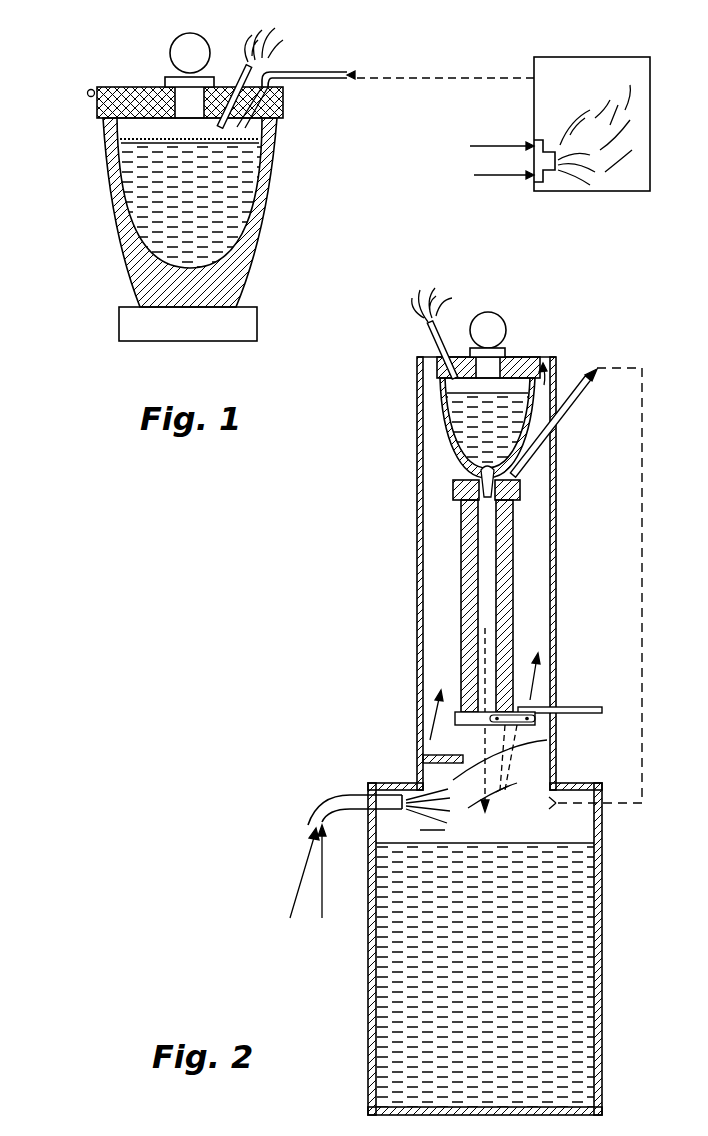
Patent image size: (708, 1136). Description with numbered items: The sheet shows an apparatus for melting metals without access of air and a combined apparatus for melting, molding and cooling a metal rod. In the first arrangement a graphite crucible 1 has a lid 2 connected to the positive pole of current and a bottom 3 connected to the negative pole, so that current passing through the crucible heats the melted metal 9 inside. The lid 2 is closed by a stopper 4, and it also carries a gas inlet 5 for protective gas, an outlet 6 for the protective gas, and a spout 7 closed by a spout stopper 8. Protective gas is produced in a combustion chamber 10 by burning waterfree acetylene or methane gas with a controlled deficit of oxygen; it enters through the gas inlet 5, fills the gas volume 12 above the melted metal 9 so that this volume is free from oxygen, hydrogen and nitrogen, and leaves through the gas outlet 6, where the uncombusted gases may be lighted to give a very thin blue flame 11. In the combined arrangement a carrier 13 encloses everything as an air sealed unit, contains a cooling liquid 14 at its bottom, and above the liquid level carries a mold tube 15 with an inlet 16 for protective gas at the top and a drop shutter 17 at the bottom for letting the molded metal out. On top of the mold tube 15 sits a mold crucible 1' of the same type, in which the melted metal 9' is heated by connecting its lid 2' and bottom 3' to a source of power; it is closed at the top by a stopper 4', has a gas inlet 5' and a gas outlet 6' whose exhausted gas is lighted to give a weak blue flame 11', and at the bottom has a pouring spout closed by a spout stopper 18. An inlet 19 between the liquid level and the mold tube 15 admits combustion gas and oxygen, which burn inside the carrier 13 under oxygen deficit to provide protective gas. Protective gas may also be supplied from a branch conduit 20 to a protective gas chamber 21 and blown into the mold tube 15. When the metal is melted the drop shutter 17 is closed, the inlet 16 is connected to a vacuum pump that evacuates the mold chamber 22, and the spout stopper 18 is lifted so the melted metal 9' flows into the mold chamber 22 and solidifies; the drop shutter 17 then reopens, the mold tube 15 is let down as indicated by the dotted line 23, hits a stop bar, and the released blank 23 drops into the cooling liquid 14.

In FIG. 1, the graphite crucible 1 is at (172, 212).
In FIG. 1, the lid 2 is at (216, 103).
In FIG. 1, the bottom 3 is at (163, 324).
In FIG. 1, the stopper 4 is at (183, 44).
In FIG. 1, the gas inlet 5 is at (296, 82).
In FIG. 1, the gas outlet 6 is at (234, 73).
In FIG. 1, the spout 7 is at (100, 118).
In FIG. 1, the spout stopper 8 is at (86, 93).
In FIG. 1, the melted metal 9 is at (212, 208).
In FIG. 1, the combustion chamber 10 is at (578, 185).
In FIG. 1, the flame 11 is at (275, 31).
In FIG. 1, the gas volume 12 is at (258, 128).
In FIG. 2, the mold crucible 1' is at (453, 428).
In FIG. 2, the lid 2' is at (455, 369).
In FIG. 2, the bottom 3' is at (445, 491).
In FIG. 2, the stopper 4' is at (495, 318).
In FIG. 2, the gas inlet 5' is at (534, 350).
In FIG. 2, the gas outlet 6' is at (415, 350).
In FIG. 2, the melted metal 9' is at (451, 430).
In FIG. 2, the flame 11' is at (449, 293).
In FIG. 2, the carrier 13 is at (417, 531).
In FIG. 2, the cooling liquid 14 is at (580, 922).
In FIG. 2, the mold tube 15 is at (512, 600).
In FIG. 2, the inlet 16 is at (574, 416).
In FIG. 2, the drop shutter 17 is at (455, 715).
In FIG. 2, the spout stopper 18 is at (490, 468).
In FIG. 2, the inlet 19 is at (352, 796).
In FIG. 2, the branch conduit 20 is at (645, 780).
In FIG. 2, the protective gas chamber 21 is at (588, 832).
In FIG. 2, the mold chamber 22 is at (480, 606).
In FIG. 2, the dotted line / blank 23 is at (556, 752).